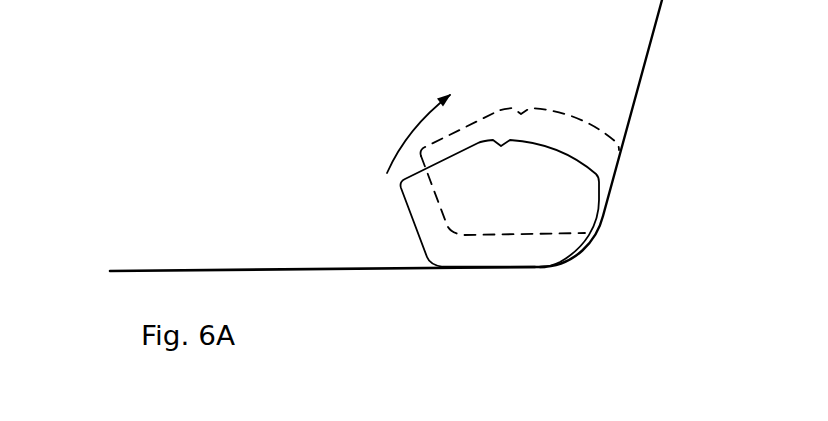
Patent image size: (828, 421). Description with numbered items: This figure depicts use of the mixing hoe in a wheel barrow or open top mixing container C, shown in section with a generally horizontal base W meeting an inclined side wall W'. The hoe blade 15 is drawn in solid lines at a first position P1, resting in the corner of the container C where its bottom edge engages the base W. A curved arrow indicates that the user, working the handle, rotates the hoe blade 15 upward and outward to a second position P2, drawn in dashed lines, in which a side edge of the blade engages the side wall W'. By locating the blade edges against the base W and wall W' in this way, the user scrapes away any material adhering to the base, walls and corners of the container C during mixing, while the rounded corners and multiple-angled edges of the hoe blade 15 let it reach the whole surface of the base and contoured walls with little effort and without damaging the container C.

The container C is at (192, 121).
The position P1 is at (418, 205).
The position P2 is at (548, 118).
The base W is at (322, 287).
The side wall W' is at (621, 133).
The hoe blade 15 is at (493, 248).